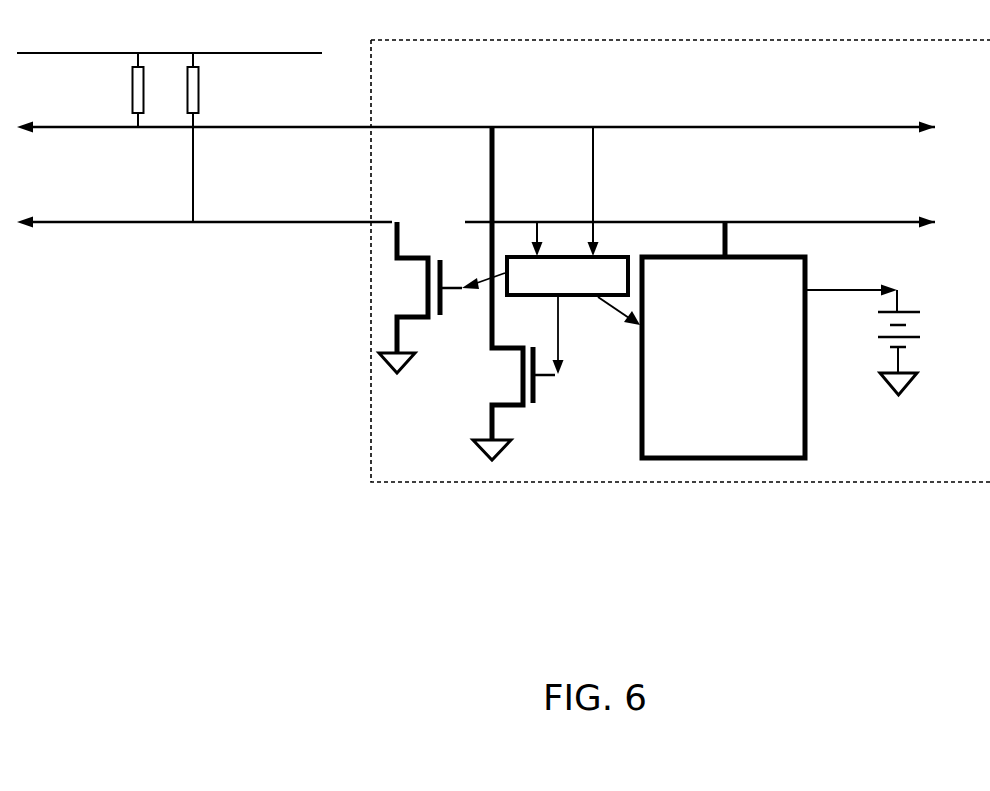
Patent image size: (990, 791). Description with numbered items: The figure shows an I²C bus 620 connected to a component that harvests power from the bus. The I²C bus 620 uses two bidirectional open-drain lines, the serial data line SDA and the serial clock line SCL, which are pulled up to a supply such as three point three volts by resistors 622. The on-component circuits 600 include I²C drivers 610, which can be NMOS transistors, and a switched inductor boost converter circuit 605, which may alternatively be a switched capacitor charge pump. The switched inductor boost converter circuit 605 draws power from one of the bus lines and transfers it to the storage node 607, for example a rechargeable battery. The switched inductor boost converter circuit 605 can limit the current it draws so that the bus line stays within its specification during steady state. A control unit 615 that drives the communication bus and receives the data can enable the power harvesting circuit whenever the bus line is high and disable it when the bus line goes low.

The on-component circuits 600 is at (978, 75).
The switched inductor boost converter circuit 605 is at (727, 450).
The storage node 607 is at (917, 429).
The I²C drivers 610 is at (443, 447).
The control unit 615 is at (582, 285).
The I²C bus 620 is at (236, 111).
The resistors 622 is at (200, 41).